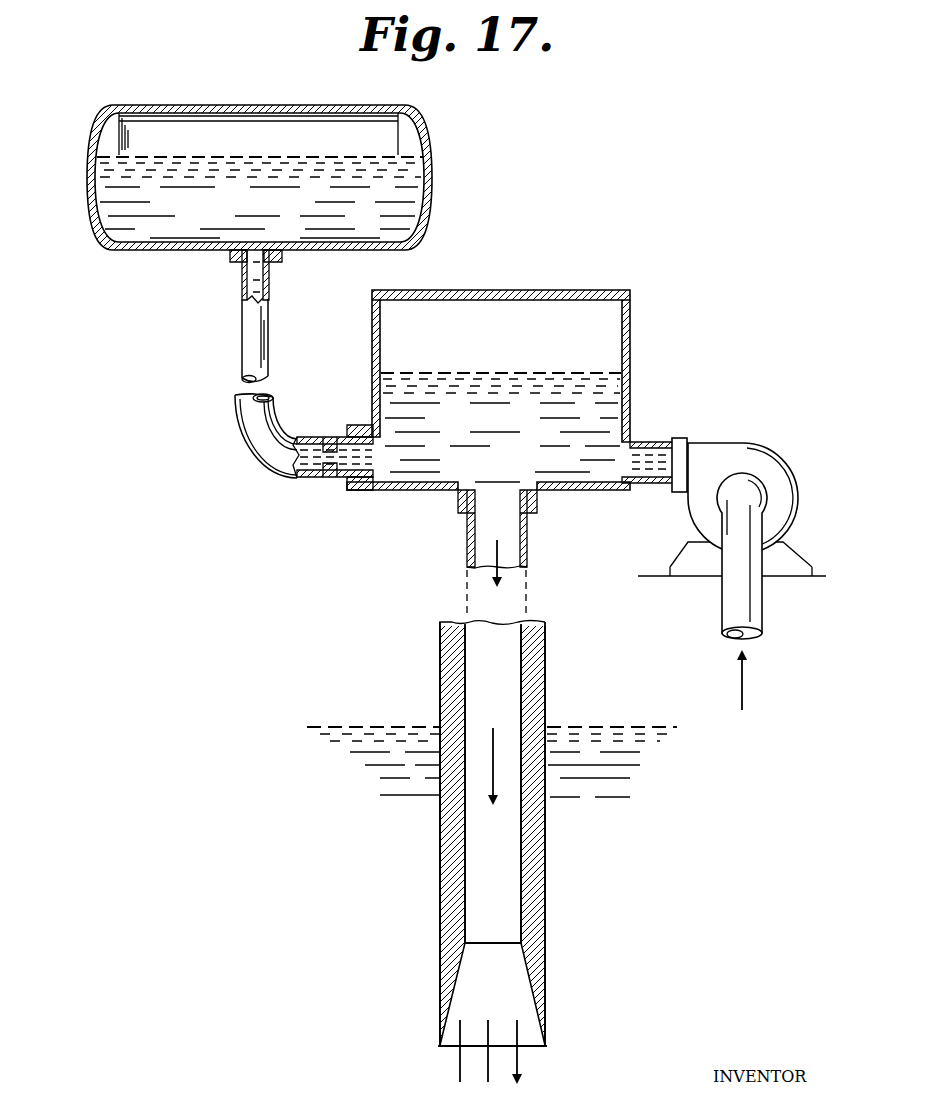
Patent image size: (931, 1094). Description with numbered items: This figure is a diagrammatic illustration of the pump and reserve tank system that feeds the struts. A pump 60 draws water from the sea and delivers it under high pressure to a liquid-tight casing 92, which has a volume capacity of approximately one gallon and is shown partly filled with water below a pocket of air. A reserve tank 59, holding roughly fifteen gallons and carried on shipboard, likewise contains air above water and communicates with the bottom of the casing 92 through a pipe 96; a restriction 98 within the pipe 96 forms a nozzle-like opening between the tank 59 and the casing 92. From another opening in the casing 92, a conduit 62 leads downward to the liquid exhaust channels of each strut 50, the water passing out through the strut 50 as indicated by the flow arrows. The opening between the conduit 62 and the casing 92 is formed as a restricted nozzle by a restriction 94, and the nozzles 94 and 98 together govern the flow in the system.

The strut 50 is at (437, 838).
The reserve tank 59 is at (218, 105).
The pump 60 is at (759, 451).
The conduit 62 is at (529, 537).
The liquid-tight casing 92 is at (579, 291).
The restriction 94 is at (500, 485).
The pipe 96 is at (248, 330).
The restriction 98 is at (321, 460).